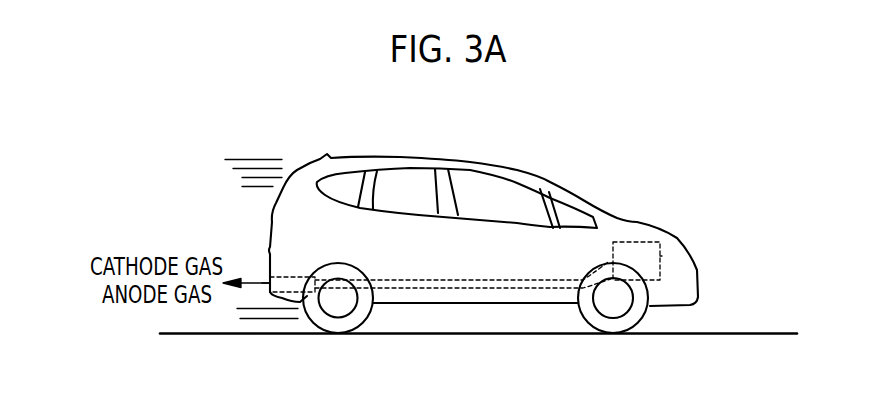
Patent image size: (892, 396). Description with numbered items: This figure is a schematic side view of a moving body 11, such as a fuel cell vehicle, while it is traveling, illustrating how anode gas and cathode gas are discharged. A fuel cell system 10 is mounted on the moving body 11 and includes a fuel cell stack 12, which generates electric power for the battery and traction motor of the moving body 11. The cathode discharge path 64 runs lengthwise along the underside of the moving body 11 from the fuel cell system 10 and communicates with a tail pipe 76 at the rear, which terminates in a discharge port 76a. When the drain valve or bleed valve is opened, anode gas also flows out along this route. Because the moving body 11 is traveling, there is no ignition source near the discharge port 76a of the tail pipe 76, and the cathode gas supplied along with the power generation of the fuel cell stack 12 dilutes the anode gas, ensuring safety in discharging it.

The moving body 11 is at (513, 157).
The fuel cell system 10 is at (632, 236).
The fuel cell stack 12 is at (660, 256).
The cathode discharge path 64 is at (425, 280).
The tail pipe 76 is at (283, 277).
The discharge port 76a is at (259, 280).